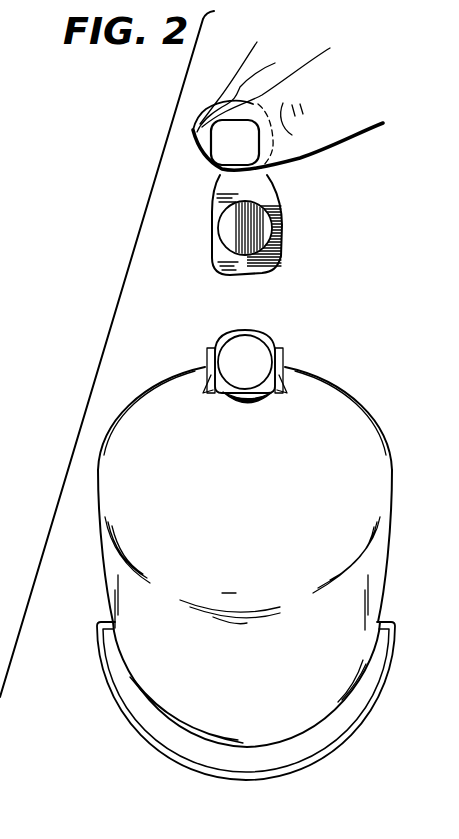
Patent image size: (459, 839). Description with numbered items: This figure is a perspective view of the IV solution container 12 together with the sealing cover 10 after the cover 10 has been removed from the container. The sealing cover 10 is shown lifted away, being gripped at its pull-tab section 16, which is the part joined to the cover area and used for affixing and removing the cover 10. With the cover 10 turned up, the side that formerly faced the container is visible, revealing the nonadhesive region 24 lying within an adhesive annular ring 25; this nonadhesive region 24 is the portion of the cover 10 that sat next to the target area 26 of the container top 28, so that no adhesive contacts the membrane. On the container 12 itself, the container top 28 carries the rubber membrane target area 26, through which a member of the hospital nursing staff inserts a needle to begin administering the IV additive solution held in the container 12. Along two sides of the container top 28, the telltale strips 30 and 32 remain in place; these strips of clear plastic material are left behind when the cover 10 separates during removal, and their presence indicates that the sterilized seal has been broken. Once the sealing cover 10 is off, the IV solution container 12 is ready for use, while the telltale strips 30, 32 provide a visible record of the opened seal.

The sealing cover 10 is at (302, 176).
The IV solution container 12 is at (257, 676).
The pull-tab section 16 is at (261, 105).
The nonadhesive region 24 is at (262, 225).
The adhesive annular ring 25 is at (267, 268).
The target area 26 is at (258, 371).
The container top 28 is at (272, 397).
The telltale strip 30 is at (287, 364).
The telltale strip 32 is at (203, 365).